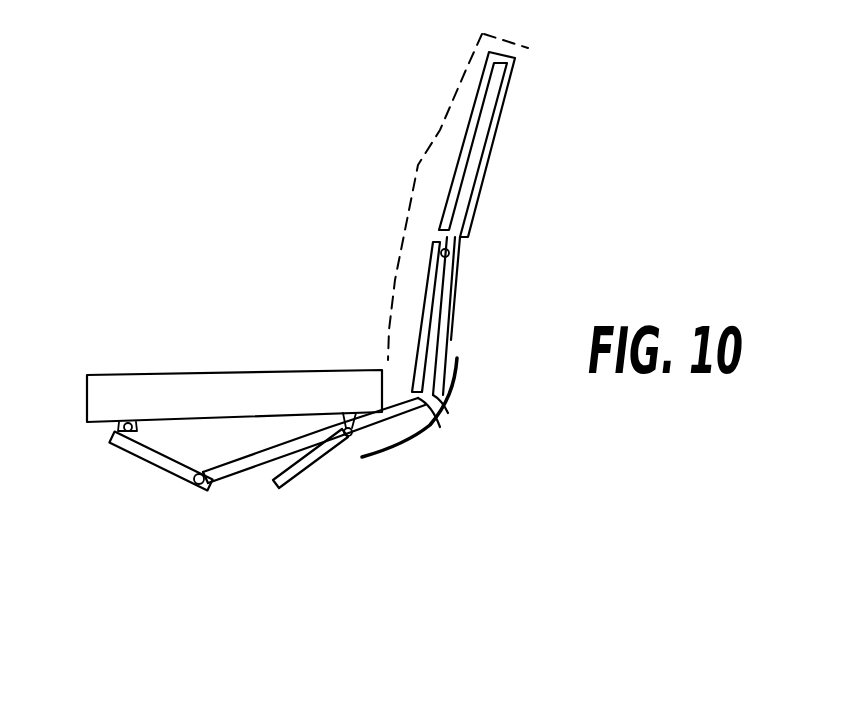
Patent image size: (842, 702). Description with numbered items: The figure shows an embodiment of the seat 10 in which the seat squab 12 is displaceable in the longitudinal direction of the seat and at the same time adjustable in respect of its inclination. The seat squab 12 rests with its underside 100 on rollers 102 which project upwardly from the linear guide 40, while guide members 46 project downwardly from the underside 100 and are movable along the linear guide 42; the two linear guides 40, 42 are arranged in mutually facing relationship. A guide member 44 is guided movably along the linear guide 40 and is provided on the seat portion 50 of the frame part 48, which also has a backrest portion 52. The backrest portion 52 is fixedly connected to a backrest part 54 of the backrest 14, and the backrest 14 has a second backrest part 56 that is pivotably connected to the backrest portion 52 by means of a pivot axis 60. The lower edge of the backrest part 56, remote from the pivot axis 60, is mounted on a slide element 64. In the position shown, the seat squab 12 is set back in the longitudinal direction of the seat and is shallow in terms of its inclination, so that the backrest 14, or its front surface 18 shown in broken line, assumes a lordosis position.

The seat 10 is at (229, 124).
The seat squab 12 is at (237, 374).
The backrest 14 is at (410, 158).
The front surface 18 is at (396, 244).
The linear guide 40 is at (150, 460).
The linear guide 42 is at (320, 484).
The guide member 44 is at (197, 486).
The guide members 46 is at (349, 440).
The frame part 48 is at (398, 425).
The seat portion 50 is at (254, 482).
The backrest portion 52 is at (442, 280).
The backrest part 54 is at (497, 120).
The second backrest part 56 is at (452, 330).
The pivot axis 60 is at (450, 251).
The slide element 64 is at (436, 414).
The underside 100 is at (186, 420).
The rollers 102 is at (126, 421).